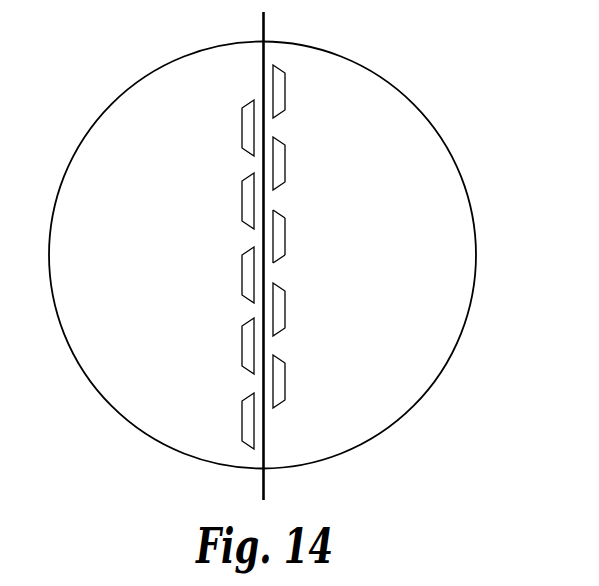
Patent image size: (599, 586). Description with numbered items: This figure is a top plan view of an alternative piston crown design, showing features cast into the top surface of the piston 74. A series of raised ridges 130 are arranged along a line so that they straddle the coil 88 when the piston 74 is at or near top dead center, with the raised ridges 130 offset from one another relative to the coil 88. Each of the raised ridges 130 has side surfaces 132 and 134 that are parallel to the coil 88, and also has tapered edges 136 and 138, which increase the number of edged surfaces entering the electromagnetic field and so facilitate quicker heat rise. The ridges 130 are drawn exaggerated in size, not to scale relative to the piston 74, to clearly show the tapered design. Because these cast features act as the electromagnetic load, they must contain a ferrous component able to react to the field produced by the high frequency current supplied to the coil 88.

The piston 74 is at (378, 148).
The coil 88 is at (262, 27).
The raised ridges 130 is at (275, 152).
The side surface 132 is at (273, 232).
The side surface 134 is at (285, 237).
The tapered edge 136 is at (275, 264).
The tapered edge 138 is at (275, 212).